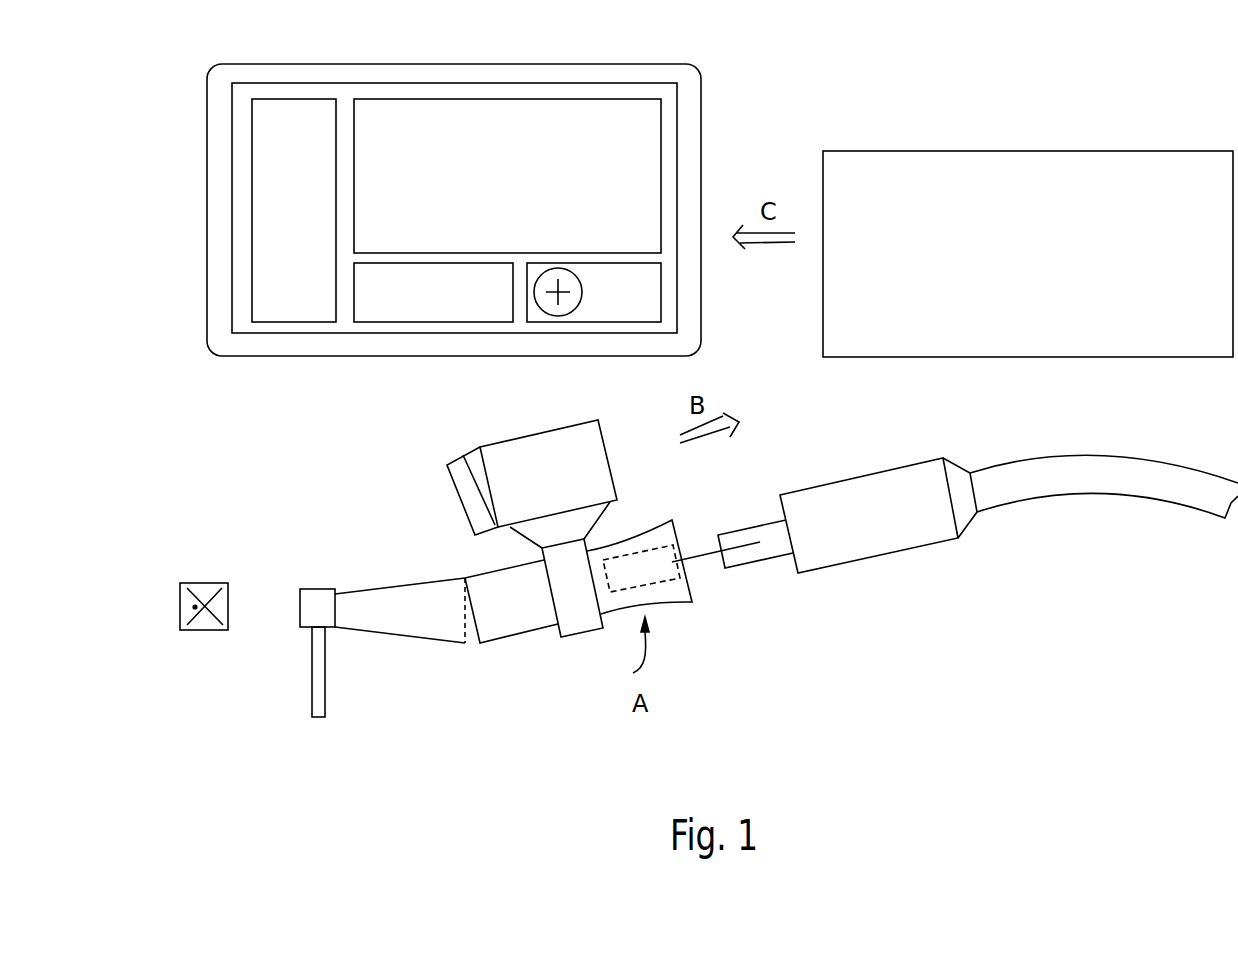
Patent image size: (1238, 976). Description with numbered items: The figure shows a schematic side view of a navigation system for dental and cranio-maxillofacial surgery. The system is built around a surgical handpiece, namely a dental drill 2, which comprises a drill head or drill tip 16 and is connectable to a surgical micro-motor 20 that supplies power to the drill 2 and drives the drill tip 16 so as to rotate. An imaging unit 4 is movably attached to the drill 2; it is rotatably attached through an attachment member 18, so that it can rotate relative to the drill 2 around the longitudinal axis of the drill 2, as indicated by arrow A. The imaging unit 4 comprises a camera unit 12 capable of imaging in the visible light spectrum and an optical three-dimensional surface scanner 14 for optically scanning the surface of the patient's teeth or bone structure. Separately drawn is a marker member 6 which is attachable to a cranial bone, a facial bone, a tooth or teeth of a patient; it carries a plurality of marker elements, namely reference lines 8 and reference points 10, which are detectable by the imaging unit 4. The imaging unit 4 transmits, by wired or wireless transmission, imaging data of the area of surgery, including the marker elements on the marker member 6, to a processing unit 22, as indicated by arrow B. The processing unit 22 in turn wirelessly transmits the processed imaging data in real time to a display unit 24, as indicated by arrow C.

The dental drill 2 is at (503, 622).
The imaging unit 4 is at (612, 472).
The marker member 6 is at (177, 602).
The reference lines 8 is at (217, 620).
The reference points 10 is at (185, 607).
The camera unit 12 is at (528, 449).
The optical 3D surface scanner 14 is at (457, 482).
The drill tip 16 is at (325, 693).
The attachment member 18 is at (573, 617).
The surgical micro-motor 20 is at (845, 565).
The processing unit 22 is at (1022, 150).
The display unit 24 is at (453, 63).